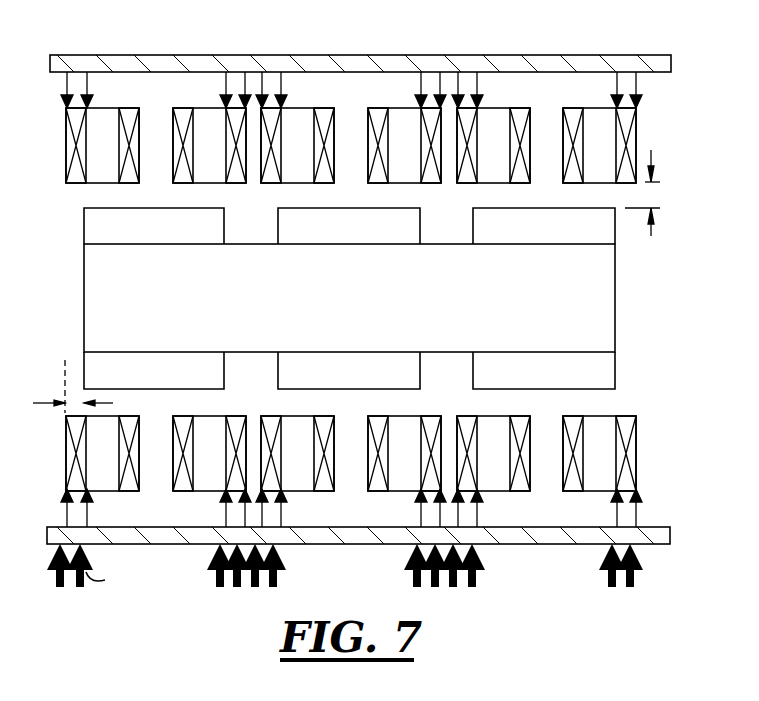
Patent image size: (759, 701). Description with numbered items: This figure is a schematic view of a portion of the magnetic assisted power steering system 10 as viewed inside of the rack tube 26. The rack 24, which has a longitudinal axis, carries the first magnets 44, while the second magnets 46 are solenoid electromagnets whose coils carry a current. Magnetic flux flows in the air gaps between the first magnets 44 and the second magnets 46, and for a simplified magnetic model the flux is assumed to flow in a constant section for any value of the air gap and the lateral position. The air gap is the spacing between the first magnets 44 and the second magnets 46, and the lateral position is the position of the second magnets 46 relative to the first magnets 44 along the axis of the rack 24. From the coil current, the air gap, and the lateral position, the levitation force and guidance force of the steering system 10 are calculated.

The magnetic assisted power steering system 10 is at (688, 239).
The rack 24 is at (603, 339).
The rack tube 26 is at (663, 62).
The first magnets 44 is at (600, 233).
The second magnets 46 is at (598, 115).